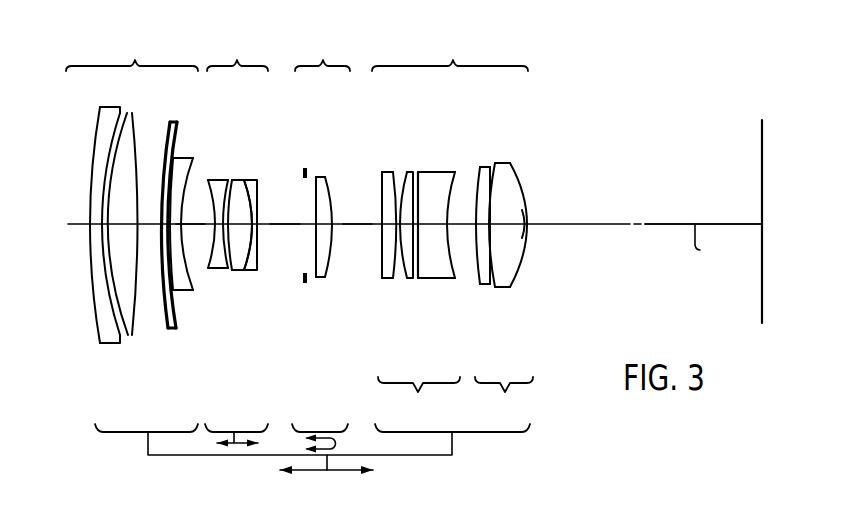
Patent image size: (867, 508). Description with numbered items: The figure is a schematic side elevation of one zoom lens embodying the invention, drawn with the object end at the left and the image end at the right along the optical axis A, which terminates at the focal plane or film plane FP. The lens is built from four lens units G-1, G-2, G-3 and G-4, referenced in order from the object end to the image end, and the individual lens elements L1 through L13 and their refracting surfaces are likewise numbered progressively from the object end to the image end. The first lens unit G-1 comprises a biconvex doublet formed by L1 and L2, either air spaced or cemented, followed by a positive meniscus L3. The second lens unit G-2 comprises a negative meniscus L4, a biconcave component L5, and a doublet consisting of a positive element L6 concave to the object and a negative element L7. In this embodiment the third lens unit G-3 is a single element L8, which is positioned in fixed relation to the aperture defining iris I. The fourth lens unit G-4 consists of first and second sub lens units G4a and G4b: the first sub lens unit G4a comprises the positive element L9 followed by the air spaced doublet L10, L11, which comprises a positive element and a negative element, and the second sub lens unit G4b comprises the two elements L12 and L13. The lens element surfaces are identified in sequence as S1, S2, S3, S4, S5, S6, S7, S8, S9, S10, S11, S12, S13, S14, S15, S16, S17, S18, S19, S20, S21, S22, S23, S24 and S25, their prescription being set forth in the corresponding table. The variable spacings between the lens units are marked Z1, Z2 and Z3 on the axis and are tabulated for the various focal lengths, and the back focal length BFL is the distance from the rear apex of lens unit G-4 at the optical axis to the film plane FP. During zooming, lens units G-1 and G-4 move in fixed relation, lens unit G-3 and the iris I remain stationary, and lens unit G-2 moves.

The first lens unit G-1 is at (132, 52).
The second lens unit G-2 is at (237, 52).
The third lens unit G-3 is at (323, 52).
The fourth lens unit G-4 is at (450, 52).
The first sub lens unit G4a is at (419, 400).
The second sub lens unit G4b is at (504, 399).
The biconvex doublet element L1 is at (80, 234).
The biconvex doublet element L2 is at (123, 253).
The positive meniscus L3 is at (176, 245).
The negative meniscus L4 is at (211, 239).
The biconcave component L5 is at (226, 234).
The positive element L6 is at (269, 213).
The negative element L7 is at (260, 190).
The single element L8 is at (337, 237).
The positive element L9 is at (375, 238).
The doublet element L10 is at (403, 239).
The doublet element L11 is at (451, 250).
The lens element L12 is at (506, 227).
The lens element L13 is at (558, 236).
The lens element surface S1 is at (90, 300).
The lens element surface S2 is at (98, 335).
The lens element surface S3 is at (115, 343).
The lens element surface S4 is at (147, 328).
The lens element surface S5 is at (157, 323).
The lens element surface S6 is at (175, 310).
The lens element surface S7 is at (193, 277).
The lens element surface S8 is at (229, 318).
The lens element surface S9 is at (212, 241).
The lens element surface S10 is at (217, 270).
The lens element surface S11 is at (242, 268).
The lens element surface S12 is at (243, 250).
The lens element surface S13 is at (260, 240).
The lens element surface S14 is at (321, 278).
The lens element surface S15 is at (324, 262).
The lens element surface S16 is at (390, 272).
The lens element surface S17 is at (398, 280).
The lens element surface S18 is at (403, 280).
The lens element surface S19 is at (425, 280).
The lens element surface S20 is at (432, 280).
The lens element surface S21 is at (455, 255).
The lens element surface S22 is at (477, 284).
The lens element surface S23 is at (497, 268).
The lens element surface S24 is at (523, 247).
The lens element surface S25 is at (523, 235).
The lens unit spacing Z1 is at (190, 214).
The lens unit spacing Z2 is at (285, 214).
The lens unit spacing Z3 is at (357, 214).
The iris I is at (303, 281).
The back focal length BFL is at (702, 211).
The focal plane FP is at (756, 146).
The optical axis A is at (704, 246).